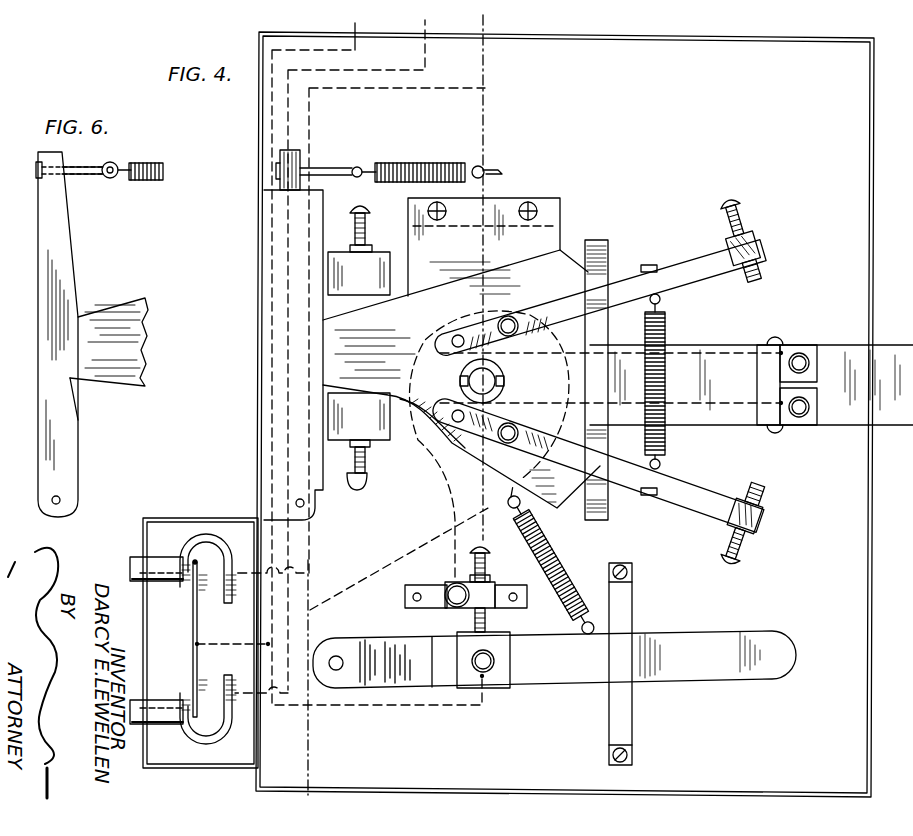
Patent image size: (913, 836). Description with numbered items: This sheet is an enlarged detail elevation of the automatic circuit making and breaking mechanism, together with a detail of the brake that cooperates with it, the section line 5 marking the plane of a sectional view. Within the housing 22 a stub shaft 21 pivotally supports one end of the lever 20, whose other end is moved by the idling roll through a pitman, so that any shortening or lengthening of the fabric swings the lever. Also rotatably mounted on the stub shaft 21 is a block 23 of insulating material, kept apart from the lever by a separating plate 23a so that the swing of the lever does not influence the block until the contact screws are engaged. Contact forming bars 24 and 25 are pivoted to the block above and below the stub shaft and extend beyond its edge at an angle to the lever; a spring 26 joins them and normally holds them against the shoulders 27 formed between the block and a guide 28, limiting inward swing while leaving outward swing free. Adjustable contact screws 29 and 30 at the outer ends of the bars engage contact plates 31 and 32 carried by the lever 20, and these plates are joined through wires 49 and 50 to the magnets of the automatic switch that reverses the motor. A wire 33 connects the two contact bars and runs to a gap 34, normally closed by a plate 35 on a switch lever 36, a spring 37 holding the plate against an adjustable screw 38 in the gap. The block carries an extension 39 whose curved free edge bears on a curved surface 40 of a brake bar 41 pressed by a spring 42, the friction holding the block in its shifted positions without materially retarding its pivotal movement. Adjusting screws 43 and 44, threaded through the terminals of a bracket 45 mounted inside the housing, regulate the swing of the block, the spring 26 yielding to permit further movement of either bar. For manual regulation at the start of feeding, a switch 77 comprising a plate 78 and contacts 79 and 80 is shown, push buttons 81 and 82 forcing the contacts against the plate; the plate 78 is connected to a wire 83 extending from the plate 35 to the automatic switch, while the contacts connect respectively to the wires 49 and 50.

In FIG. 4, the section line 5- 5 is at (392, 412).
In FIG. 4, the lever 20 is at (855, 412).
In FIG. 4, the stub shaft 21 is at (461, 382).
In FIG. 4, the housing 22 is at (264, 323).
In FIG. 4, the block 23 is at (455, 284).
In FIG. 4, the separating plate 23a is at (555, 248).
In FIG. 4, the contact forming bar 24 is at (690, 266).
In FIG. 4, the contact forming bar 25 is at (693, 503).
In FIG. 4, the spring 26 is at (666, 334).
In FIG. 4, the shoulders 27 is at (606, 300).
In FIG. 4, the guide 28 is at (608, 264).
In FIG. 4, the contact screw 29 is at (758, 280).
In FIG. 4, the contact screw 30 is at (762, 494).
In FIG. 4, the contact plate 31 is at (795, 345).
In FIG. 4, the contact plate 32 is at (792, 426).
In FIG. 4, the wire 33 is at (538, 345).
In FIG. 4, the gap 34 is at (449, 587).
In FIG. 4, the plate 35 is at (500, 690).
In FIG. 4, the switch lever 36 is at (676, 639).
In FIG. 4, the spring 37 is at (566, 578).
In FIG. 4, the adjustable screw 38 is at (487, 581).
In FIG. 6, the extension 39 is at (109, 342).
In FIG. 4, the extension 39 is at (375, 345).
In FIG. 6, the curved surface 40 is at (78, 400).
In FIG. 6, the brake bar 41 is at (66, 292).
In FIG. 4, the brake bar 41 is at (300, 167).
In FIG. 6, the spring 42 is at (164, 170).
In FIG. 4, the spring 42 is at (440, 165).
In FIG. 4, the adjusting screw 43 is at (366, 226).
In FIG. 4, the adjusting screw 44 is at (367, 479).
In FIG. 4, the bracket 45 is at (380, 432).
In FIG. 4, the wire 49 is at (292, 638).
In FIG. 4, the wire 50 is at (490, 74).
In FIG. 4, the switch 77 is at (210, 637).
In FIG. 4, the plate 78 is at (191, 611).
In FIG. 4, the contact 79 is at (180, 735).
In FIG. 4, the contact 80 is at (217, 530).
In FIG. 4, the push button 81 is at (140, 727).
In FIG. 4, the push button 82 is at (135, 557).
In FIG. 4, the wire 83 is at (322, 50).